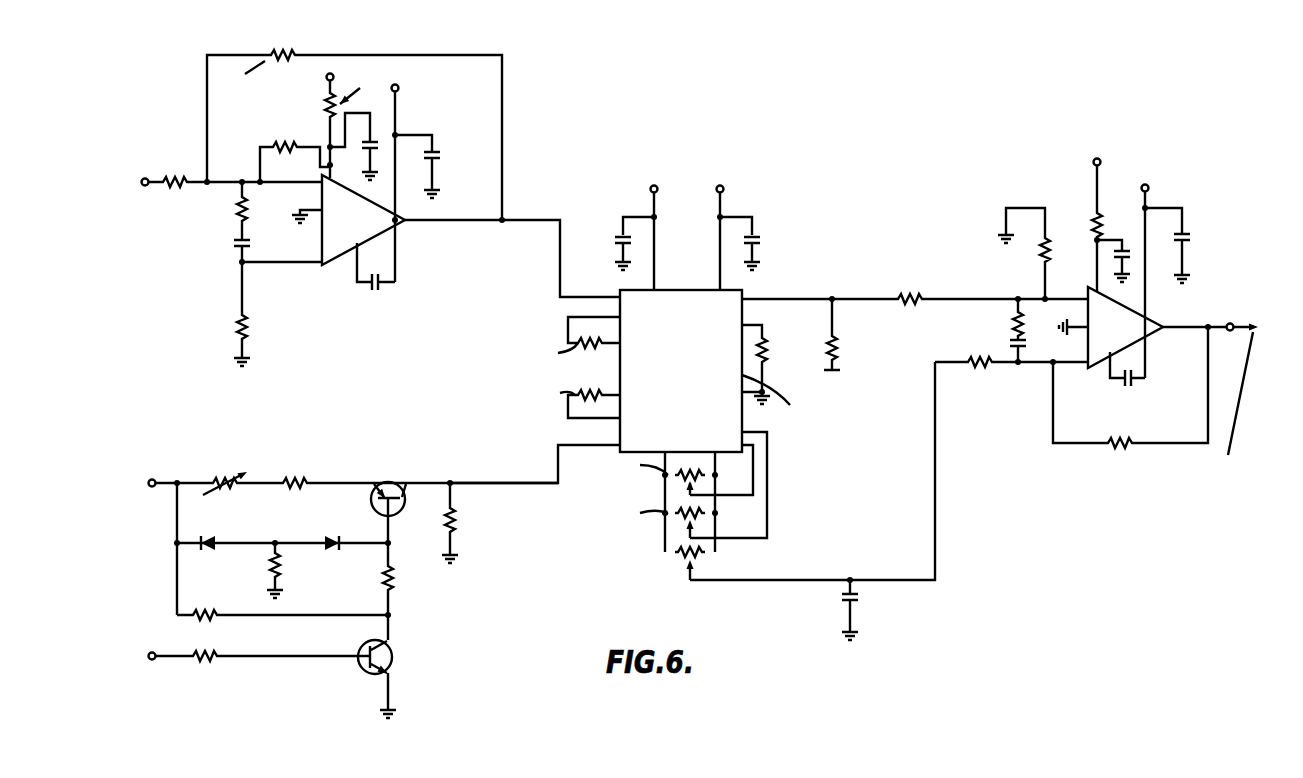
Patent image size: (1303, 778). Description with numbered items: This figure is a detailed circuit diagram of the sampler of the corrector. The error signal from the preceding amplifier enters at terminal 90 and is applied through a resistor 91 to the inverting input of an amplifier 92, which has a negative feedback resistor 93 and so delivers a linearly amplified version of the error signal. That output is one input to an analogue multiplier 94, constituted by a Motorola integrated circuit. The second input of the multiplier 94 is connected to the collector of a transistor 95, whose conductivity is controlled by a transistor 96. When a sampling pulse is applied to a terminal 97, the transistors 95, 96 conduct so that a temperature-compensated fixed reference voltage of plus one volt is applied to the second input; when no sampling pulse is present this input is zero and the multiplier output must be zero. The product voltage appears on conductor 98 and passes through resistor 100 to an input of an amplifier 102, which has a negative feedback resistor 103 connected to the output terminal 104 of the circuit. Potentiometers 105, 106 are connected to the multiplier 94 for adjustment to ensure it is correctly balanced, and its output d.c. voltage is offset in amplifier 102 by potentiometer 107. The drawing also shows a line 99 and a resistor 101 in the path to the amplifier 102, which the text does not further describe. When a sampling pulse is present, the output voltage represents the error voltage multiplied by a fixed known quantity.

The terminal 90 is at (145, 180).
The resistor 91 is at (209, 182).
The amplifier 92 is at (322, 256).
The negative feedback resistor 93 is at (266, 56).
The analogue multiplier 94 is at (683, 290).
The transistor 95 is at (403, 508).
The transistor 96 is at (365, 674).
The terminal 97 is at (151, 653).
The conductor 98 is at (818, 297).
The feedback line to second amplifier 99 is at (935, 580).
The resistor 100 is at (908, 302).
The resistor 2.2k 101 is at (975, 362).
The amplifier 102 is at (1095, 374).
The negative feedback resistor 103 is at (1125, 446).
The output terminal 104 is at (1228, 327).
The potentiometer 105 is at (682, 480).
The potentiometer 106 is at (715, 513).
The potentiometer 107 is at (675, 556).